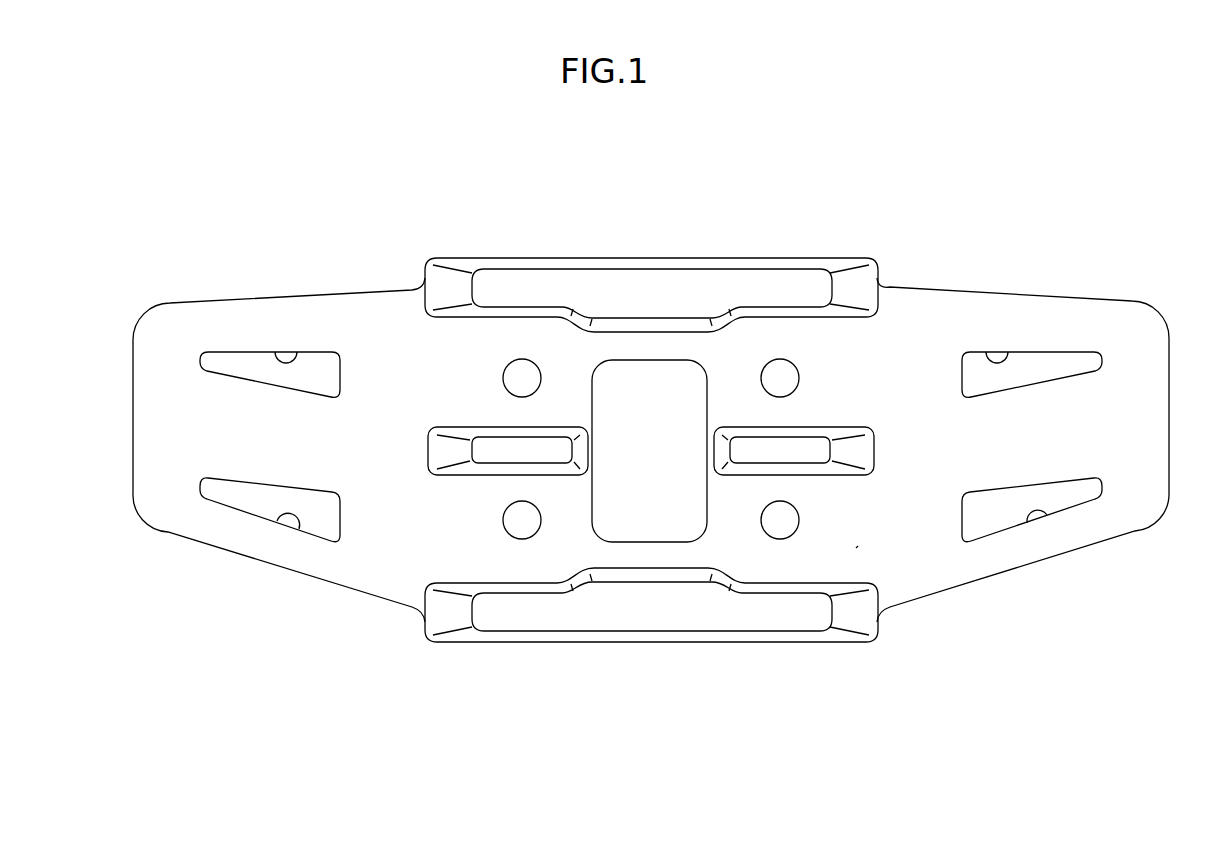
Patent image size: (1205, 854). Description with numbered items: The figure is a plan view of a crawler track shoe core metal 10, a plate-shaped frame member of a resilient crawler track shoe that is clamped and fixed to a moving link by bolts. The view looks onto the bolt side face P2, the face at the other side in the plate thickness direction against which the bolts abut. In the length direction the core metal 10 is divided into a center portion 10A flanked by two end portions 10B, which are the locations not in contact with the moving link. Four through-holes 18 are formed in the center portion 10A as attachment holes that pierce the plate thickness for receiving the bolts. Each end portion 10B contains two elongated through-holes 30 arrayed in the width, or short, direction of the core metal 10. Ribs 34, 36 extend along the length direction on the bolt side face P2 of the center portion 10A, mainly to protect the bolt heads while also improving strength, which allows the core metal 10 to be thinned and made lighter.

The crawler track shoe core metal 10 is at (946, 254).
The center portion 10A is at (603, 258).
The end portions 10B is at (657, 422).
The through-holes 18 is at (505, 364).
The through-holes 30 is at (289, 357).
The ribs 34 is at (514, 456).
The ribs 36 is at (695, 290).
The bolt side face P2 is at (856, 548).